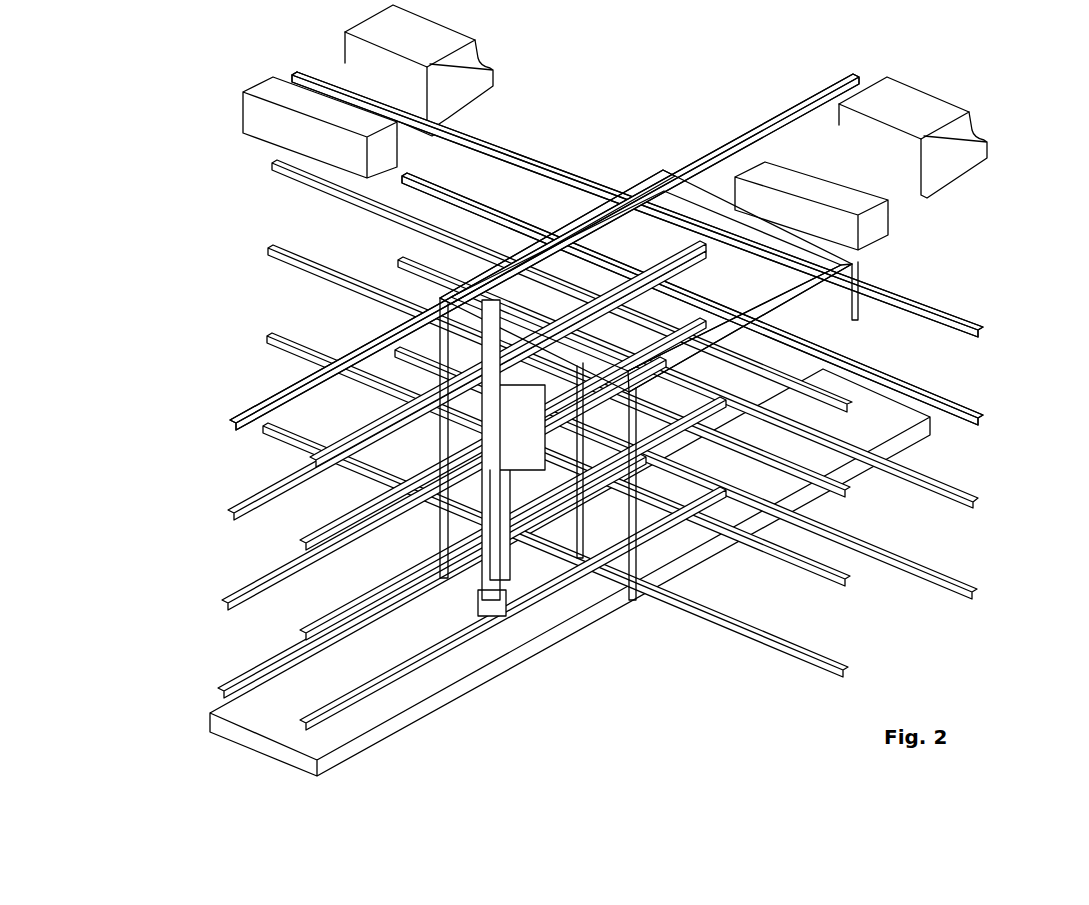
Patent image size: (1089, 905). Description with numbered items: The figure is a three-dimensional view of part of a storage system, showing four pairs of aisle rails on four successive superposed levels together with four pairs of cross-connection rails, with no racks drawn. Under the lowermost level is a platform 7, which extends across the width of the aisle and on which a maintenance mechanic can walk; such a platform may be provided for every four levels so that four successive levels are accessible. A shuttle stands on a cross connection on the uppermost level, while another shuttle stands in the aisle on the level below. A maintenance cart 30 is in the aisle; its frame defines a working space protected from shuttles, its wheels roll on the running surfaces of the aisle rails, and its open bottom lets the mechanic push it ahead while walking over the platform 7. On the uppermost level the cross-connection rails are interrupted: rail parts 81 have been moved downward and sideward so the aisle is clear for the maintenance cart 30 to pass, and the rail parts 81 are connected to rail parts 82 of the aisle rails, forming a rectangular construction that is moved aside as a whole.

The platform 7 is at (270, 727).
The maintenance cart 30 is at (663, 130).
The rail parts 81 is at (582, 178).
The rail parts 82 is at (497, 190).